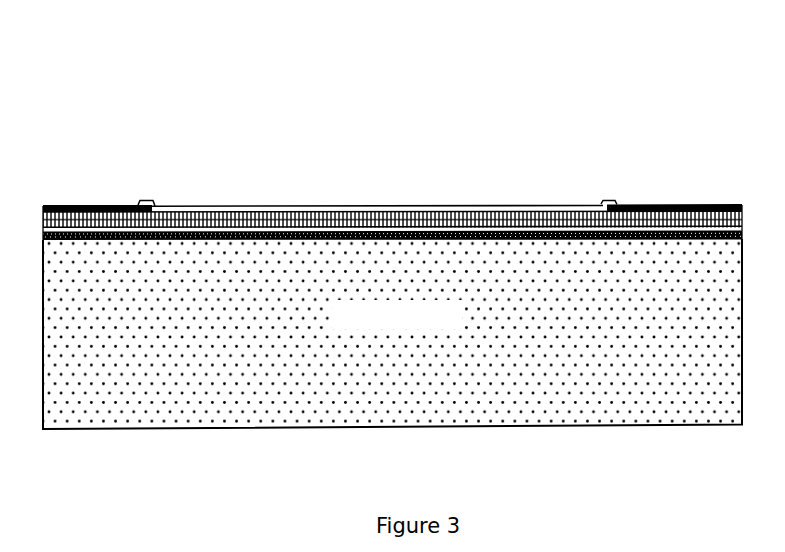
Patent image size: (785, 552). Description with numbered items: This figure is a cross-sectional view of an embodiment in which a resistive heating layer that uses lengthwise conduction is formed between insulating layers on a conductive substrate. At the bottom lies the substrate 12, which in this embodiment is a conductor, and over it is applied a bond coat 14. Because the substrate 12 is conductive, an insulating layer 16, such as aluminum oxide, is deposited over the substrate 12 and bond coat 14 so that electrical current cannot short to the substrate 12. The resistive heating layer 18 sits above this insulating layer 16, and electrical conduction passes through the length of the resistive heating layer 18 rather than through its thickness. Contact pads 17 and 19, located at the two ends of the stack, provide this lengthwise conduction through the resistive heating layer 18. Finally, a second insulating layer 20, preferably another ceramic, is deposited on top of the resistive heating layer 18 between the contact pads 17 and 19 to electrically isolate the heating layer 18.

The substrate 12 is at (398, 322).
The bond coat 14 is at (445, 205).
The insulating layer 16 is at (535, 207).
The contact pad 17 is at (114, 206).
The resistive heating layer 18 is at (568, 208).
The contact pad 19 is at (655, 207).
The second insulating layer 20 is at (602, 203).